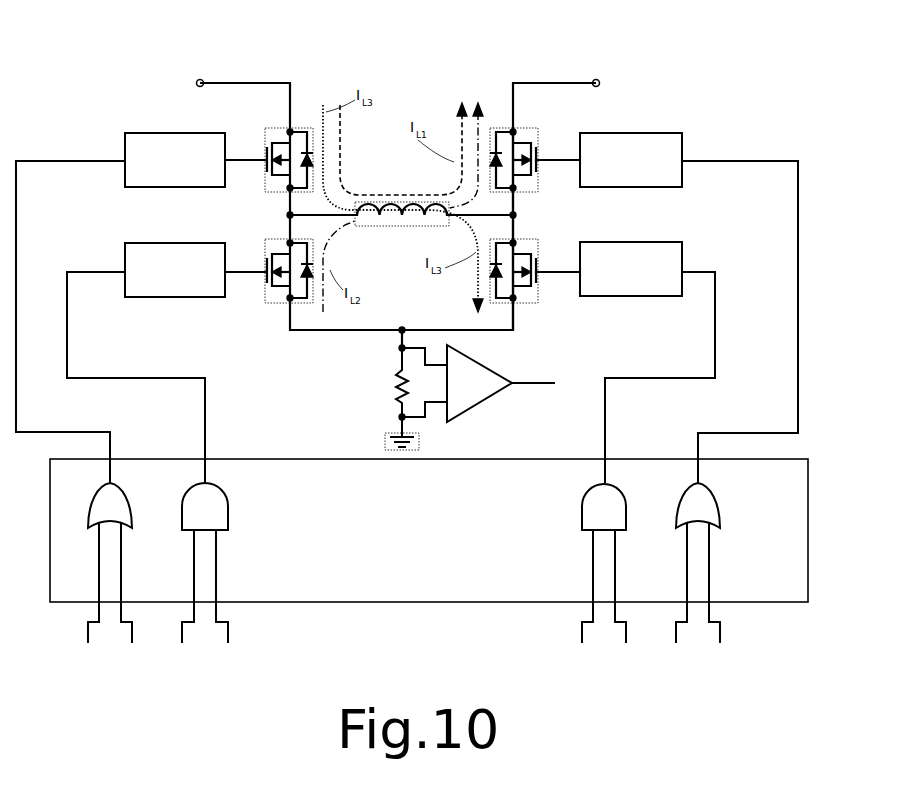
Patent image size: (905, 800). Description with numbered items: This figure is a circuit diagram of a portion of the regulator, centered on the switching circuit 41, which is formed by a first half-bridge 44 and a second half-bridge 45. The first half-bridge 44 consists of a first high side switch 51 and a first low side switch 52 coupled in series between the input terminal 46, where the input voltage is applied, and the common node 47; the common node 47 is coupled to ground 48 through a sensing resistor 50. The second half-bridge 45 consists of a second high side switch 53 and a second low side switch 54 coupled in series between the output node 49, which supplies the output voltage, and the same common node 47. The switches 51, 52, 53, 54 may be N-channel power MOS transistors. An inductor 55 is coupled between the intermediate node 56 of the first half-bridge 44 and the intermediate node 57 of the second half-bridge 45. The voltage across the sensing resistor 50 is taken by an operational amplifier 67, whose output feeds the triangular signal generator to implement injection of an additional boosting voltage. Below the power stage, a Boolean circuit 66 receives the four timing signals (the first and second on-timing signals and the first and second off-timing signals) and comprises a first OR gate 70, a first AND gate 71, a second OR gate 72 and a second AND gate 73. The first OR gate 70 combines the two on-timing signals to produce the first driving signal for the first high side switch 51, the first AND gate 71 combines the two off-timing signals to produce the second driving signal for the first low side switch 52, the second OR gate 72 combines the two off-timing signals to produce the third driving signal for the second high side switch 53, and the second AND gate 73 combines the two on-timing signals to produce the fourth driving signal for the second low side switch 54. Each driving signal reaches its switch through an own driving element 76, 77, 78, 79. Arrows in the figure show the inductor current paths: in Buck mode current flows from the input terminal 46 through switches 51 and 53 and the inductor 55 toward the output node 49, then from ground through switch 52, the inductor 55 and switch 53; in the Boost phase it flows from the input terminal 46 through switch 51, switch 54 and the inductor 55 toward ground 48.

The switching circuit 41 is at (406, 74).
The first half-bridge 44 is at (301, 106).
The second half-bridge 45 is at (522, 118).
The input terminal 46 is at (198, 79).
The common node 47 is at (404, 328).
The reference potential line (ground) 48 is at (398, 437).
The output node 49 is at (598, 79).
The sensing resistor 50 is at (396, 389).
The first high side switch (first HSS) 51 is at (278, 142).
The first low side switch (first LSS) 52 is at (284, 292).
The second high side switch (second HSS) 53 is at (524, 142).
The second low side switch (second LSS) 54 is at (521, 288).
The inductor 55 is at (360, 222).
The intermediate node of the first half-bridge 56 is at (288, 215).
The intermediate node of the second half-bridge 57 is at (516, 215).
The Boolean circuit 66 is at (808, 600).
The operational amplifier 67 is at (462, 410).
The first OR gate 70 is at (98, 489).
The first AND gate 71 is at (230, 498).
The second OR gate 72 is at (722, 506).
The second AND gate 73 is at (584, 493).
The driving element 76 is at (127, 134).
The driving element 77 is at (126, 243).
The driving element 78 is at (676, 134).
The driving element 79 is at (660, 240).